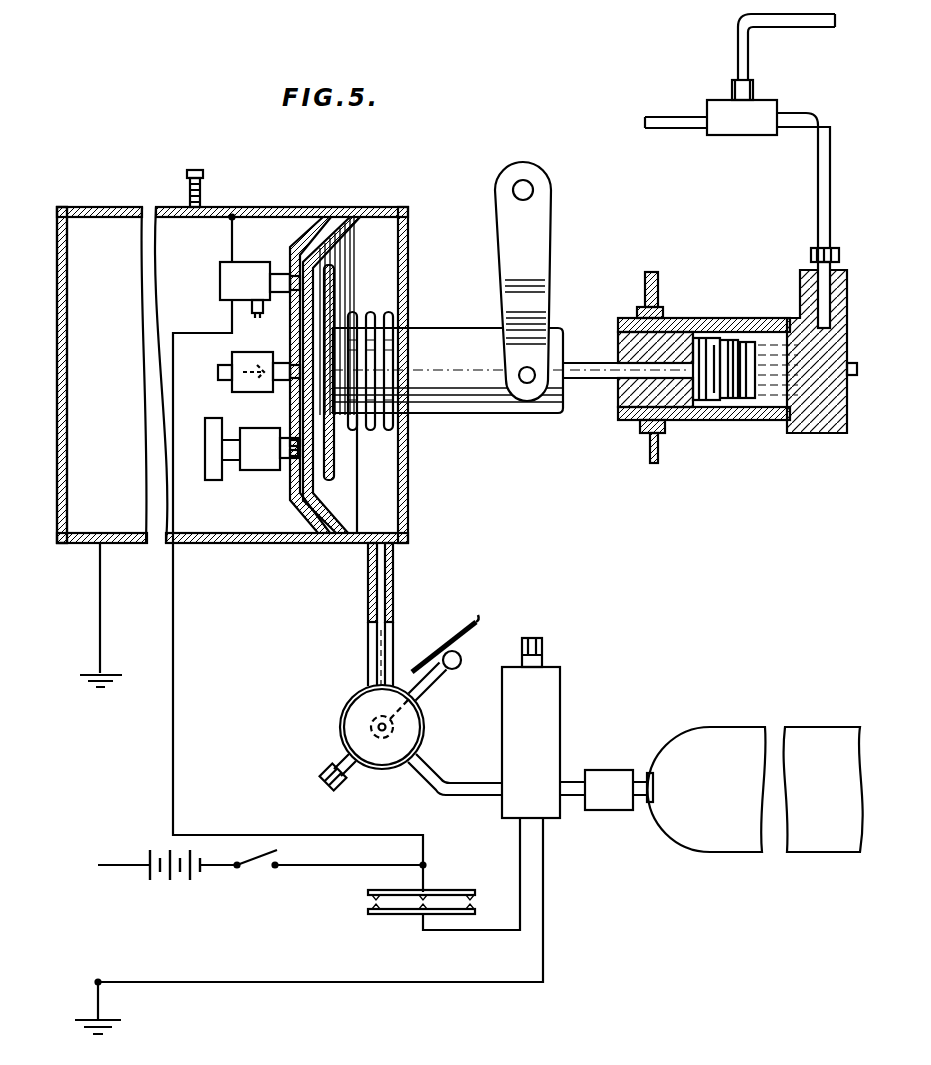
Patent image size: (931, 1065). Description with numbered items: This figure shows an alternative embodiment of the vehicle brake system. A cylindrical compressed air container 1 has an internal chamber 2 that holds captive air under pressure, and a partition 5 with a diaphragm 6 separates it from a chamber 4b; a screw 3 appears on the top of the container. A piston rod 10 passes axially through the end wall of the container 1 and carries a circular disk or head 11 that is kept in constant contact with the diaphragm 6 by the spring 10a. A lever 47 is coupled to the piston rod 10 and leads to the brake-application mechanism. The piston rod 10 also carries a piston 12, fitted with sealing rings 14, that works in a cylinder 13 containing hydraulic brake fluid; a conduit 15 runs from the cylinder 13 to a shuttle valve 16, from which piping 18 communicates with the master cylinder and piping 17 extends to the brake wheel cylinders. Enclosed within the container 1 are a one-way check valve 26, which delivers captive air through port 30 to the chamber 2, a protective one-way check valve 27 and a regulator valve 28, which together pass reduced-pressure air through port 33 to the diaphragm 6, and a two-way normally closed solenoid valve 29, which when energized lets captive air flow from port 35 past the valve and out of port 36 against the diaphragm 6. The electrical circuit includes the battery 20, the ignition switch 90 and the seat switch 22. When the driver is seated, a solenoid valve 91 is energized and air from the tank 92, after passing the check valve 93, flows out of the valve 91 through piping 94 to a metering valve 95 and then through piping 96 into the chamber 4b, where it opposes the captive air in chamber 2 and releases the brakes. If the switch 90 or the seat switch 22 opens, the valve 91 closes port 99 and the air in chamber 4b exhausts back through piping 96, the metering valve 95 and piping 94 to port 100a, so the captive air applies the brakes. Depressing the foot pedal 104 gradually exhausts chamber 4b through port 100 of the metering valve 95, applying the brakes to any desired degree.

The container 1 is at (103, 228).
The internal chamber 2 is at (75, 260).
The screw 3 is at (200, 190).
The chamber 4b is at (387, 253).
The partition 5 is at (303, 233).
The diaphragm 6 is at (353, 240).
The piston rod 10 is at (447, 343).
The spring 10a is at (370, 317).
The circular disk or head 11 is at (336, 480).
The piston 12 is at (677, 347).
The cylinder 13 is at (710, 415).
The sealing rings 14 is at (733, 415).
The conduit 15 is at (822, 200).
The shuttle valve 16 is at (745, 133).
The piping 17 is at (805, 22).
The piping 18 is at (685, 125).
The battery 20 is at (150, 862).
The seat switch 22 is at (443, 889).
The one-way check valve 26 is at (233, 356).
The one-way check valve 27 is at (254, 466).
The regulator valve 28 is at (218, 418).
The two-way normally closed solenoid switch valve 29 is at (228, 277).
The port 30 is at (282, 385).
The port 33 is at (292, 458).
The port 35 is at (258, 314).
The port 36 is at (278, 272).
The lever 47 is at (543, 233).
The ignition switch 90 is at (262, 872).
The solenoid valve 91 is at (548, 715).
The tank 92 is at (732, 740).
The check valve 93 is at (610, 780).
The piping 94 is at (453, 777).
The metering valve 95 is at (352, 710).
The piping 96 is at (392, 592).
The port 99 is at (577, 797).
The port 100 is at (327, 753).
The port 100a is at (545, 645).
The foot pedal 104 is at (478, 622).